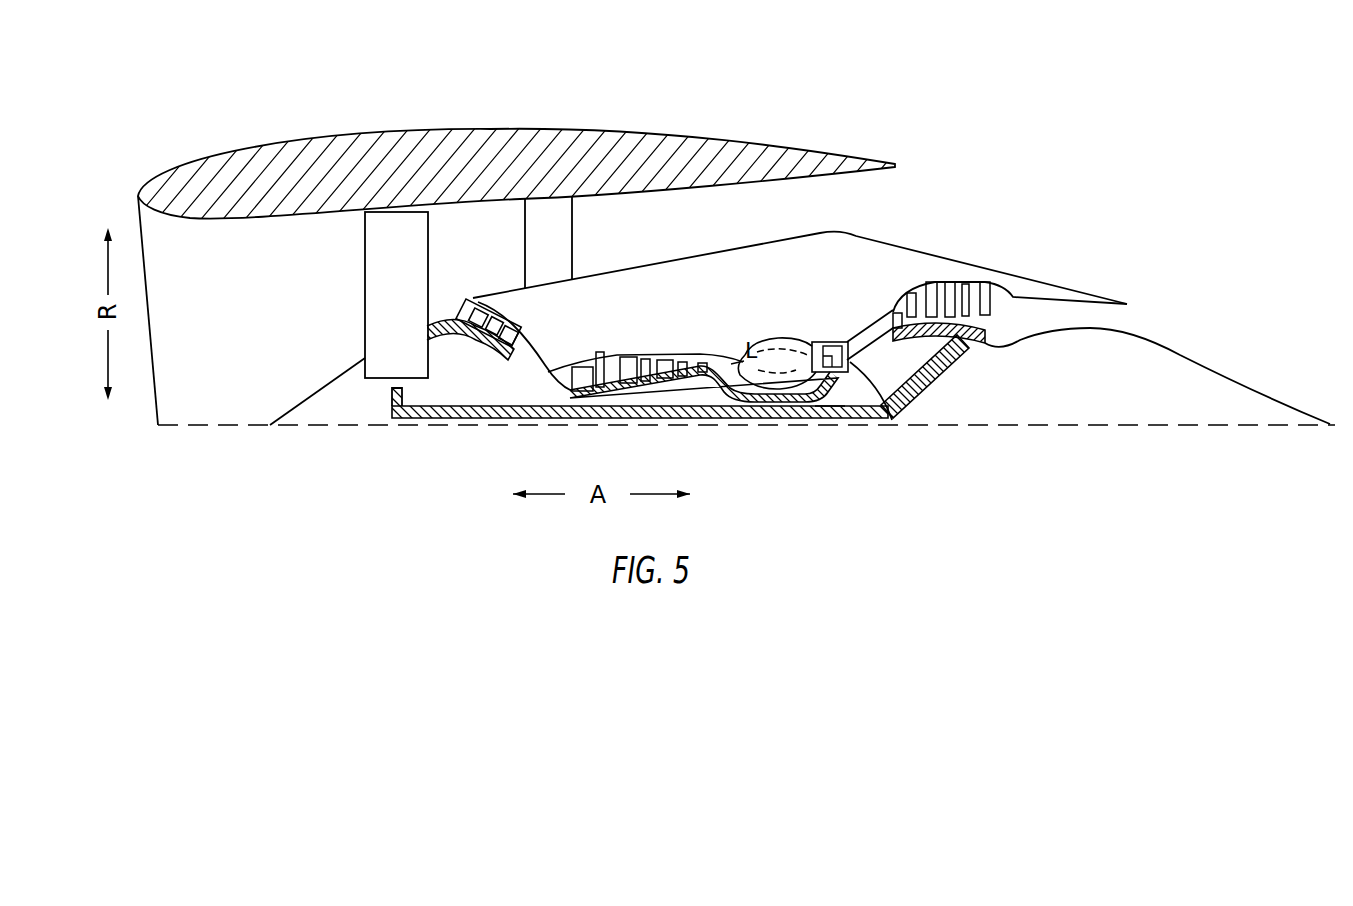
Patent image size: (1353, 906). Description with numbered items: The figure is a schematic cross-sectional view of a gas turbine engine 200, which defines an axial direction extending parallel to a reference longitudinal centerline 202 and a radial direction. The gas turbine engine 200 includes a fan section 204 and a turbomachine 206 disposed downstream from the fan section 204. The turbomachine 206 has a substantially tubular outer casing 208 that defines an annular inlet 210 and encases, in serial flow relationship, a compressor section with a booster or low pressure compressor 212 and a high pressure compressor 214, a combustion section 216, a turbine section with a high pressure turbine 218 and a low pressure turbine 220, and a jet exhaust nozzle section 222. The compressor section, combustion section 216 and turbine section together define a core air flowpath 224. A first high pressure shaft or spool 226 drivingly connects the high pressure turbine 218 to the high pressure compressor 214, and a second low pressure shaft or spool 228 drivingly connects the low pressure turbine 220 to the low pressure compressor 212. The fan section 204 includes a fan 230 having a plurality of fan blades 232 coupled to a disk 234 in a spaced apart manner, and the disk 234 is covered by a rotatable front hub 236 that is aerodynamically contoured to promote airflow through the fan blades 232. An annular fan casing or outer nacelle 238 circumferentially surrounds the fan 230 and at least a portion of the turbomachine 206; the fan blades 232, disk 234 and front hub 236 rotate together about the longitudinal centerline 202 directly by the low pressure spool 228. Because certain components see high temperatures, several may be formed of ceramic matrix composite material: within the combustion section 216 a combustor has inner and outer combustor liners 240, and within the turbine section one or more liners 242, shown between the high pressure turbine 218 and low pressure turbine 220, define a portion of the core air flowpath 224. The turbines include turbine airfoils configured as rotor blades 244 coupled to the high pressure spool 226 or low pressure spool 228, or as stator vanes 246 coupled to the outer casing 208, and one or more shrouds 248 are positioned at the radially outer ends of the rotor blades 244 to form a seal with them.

The gas turbine engine 200 is at (904, 68).
The longitudinal centerline 202 is at (1163, 428).
The fan section 204 is at (332, 243).
The turbomachine 206 is at (897, 190).
The outer casing 208 is at (917, 252).
The annular inlet 210 is at (451, 316).
The low pressure compressor 212 is at (538, 320).
The high pressure compressor 214 is at (662, 336).
The combustion section 216 is at (780, 330).
The high pressure turbine 218 is at (839, 315).
The low pressure turbine 220 is at (987, 276).
The jet exhaust nozzle section 222 is at (1082, 322).
The core air flowpath 224 is at (556, 360).
The high pressure shaft or spool 226 is at (767, 407).
The low pressure shaft or spool 228 is at (830, 410).
The fan 230 is at (328, 304).
The fan blades 232 is at (416, 310).
The disk 234 is at (373, 380).
The front hub 236 is at (300, 402).
The outer nacelle 238 is at (553, 140).
The combustor liners 240 is at (767, 337).
The liners 242 is at (895, 343).
The rotor blades 244 is at (820, 342).
The stator vanes 246 is at (892, 420).
The shrouds 248 is at (900, 297).